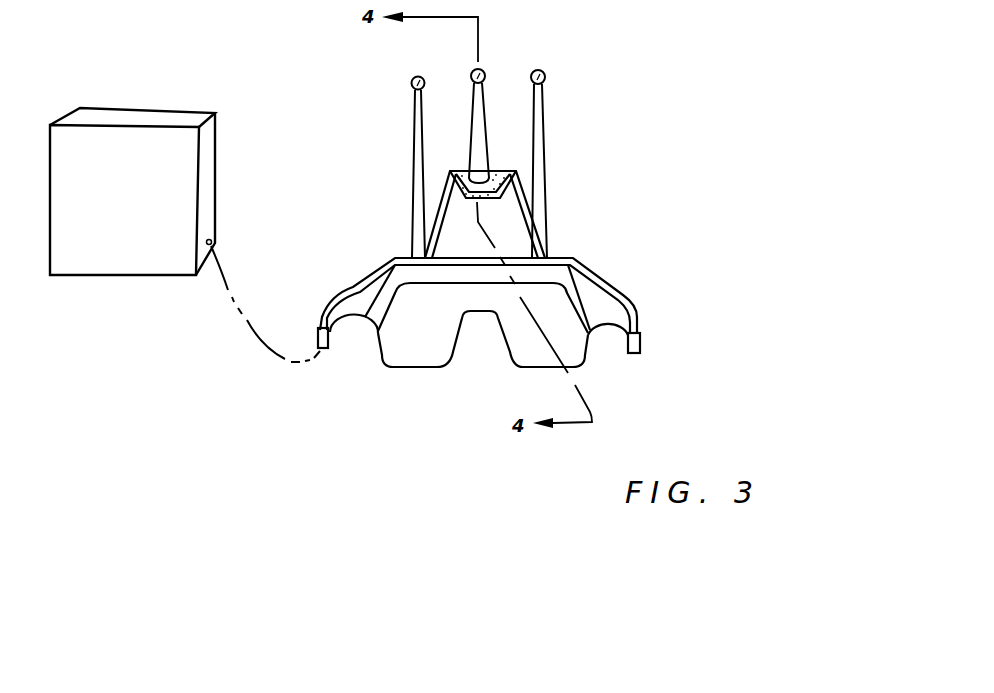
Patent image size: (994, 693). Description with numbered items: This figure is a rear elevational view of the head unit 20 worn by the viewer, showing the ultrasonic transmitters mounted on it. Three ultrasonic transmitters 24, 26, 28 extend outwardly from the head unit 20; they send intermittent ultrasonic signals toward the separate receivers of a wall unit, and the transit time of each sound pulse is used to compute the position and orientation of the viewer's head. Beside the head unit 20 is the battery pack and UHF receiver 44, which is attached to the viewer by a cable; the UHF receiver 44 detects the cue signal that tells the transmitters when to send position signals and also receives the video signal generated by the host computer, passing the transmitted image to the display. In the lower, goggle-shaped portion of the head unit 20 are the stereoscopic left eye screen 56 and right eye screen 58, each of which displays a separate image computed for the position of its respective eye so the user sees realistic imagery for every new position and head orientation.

The head unit 20 is at (580, 210).
The ultrasonic transmitter 24 is at (547, 75).
The ultrasonic transmitter 26 is at (413, 77).
The ultrasonic transmitter 28 is at (482, 68).
The UHF receiver 44 is at (203, 202).
The left eye screen 56 is at (400, 347).
The right eye screen 58 is at (527, 343).